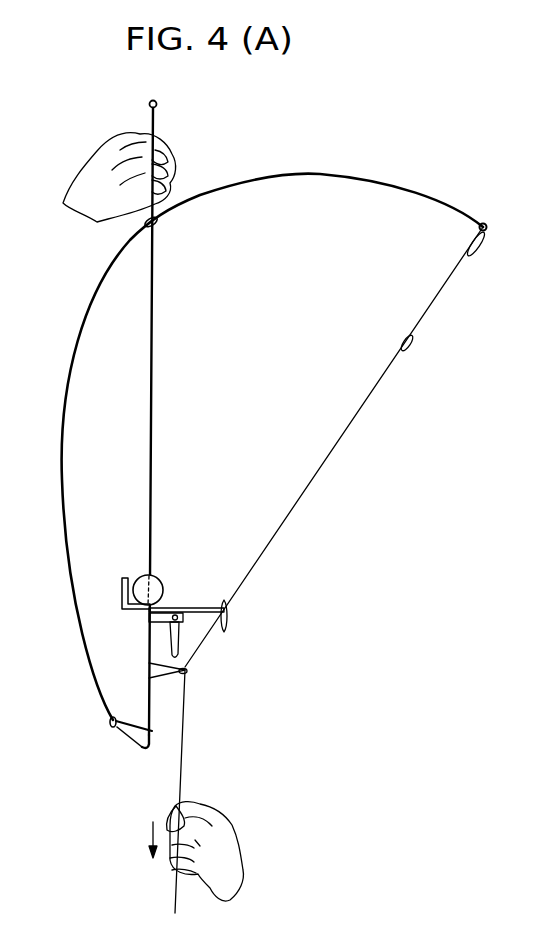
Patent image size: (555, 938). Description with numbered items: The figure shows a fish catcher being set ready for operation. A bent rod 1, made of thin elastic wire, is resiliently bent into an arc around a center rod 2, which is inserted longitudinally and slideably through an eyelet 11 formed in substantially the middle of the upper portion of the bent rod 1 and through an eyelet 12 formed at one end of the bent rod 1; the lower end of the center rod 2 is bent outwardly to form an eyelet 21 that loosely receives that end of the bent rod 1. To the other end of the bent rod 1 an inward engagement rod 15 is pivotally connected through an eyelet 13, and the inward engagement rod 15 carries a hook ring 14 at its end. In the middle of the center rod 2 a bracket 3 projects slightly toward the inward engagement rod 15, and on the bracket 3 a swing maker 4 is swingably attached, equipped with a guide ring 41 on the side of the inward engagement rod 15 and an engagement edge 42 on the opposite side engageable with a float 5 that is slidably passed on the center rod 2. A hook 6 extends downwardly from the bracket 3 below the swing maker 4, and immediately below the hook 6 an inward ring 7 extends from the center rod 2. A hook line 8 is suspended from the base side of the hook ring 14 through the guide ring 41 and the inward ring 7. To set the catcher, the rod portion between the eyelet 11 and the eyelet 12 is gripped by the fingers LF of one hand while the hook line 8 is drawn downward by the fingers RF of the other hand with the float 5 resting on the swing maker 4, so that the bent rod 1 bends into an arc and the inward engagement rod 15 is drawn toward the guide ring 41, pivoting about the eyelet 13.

The bent rod 1 is at (86, 313).
The center rod 2 is at (153, 348).
The bracket 3 is at (149, 618).
The swing maker 4 is at (203, 607).
The float 5 is at (157, 577).
The hook 6 is at (180, 648).
The inward ring 7 is at (189, 673).
The hook line 8 is at (308, 488).
The eyelet 11 is at (157, 226).
The eyelet 12 is at (137, 740).
The eyelet 13 is at (487, 232).
The hook ring 14 is at (410, 348).
The inward engagement rod 15 is at (433, 300).
The eyelet 21 is at (108, 729).
The guide ring 41 is at (229, 621).
The engagement edge 42 is at (123, 580).
The fingers of one hand LF is at (120, 150).
The fingers of another hand RF is at (194, 813).